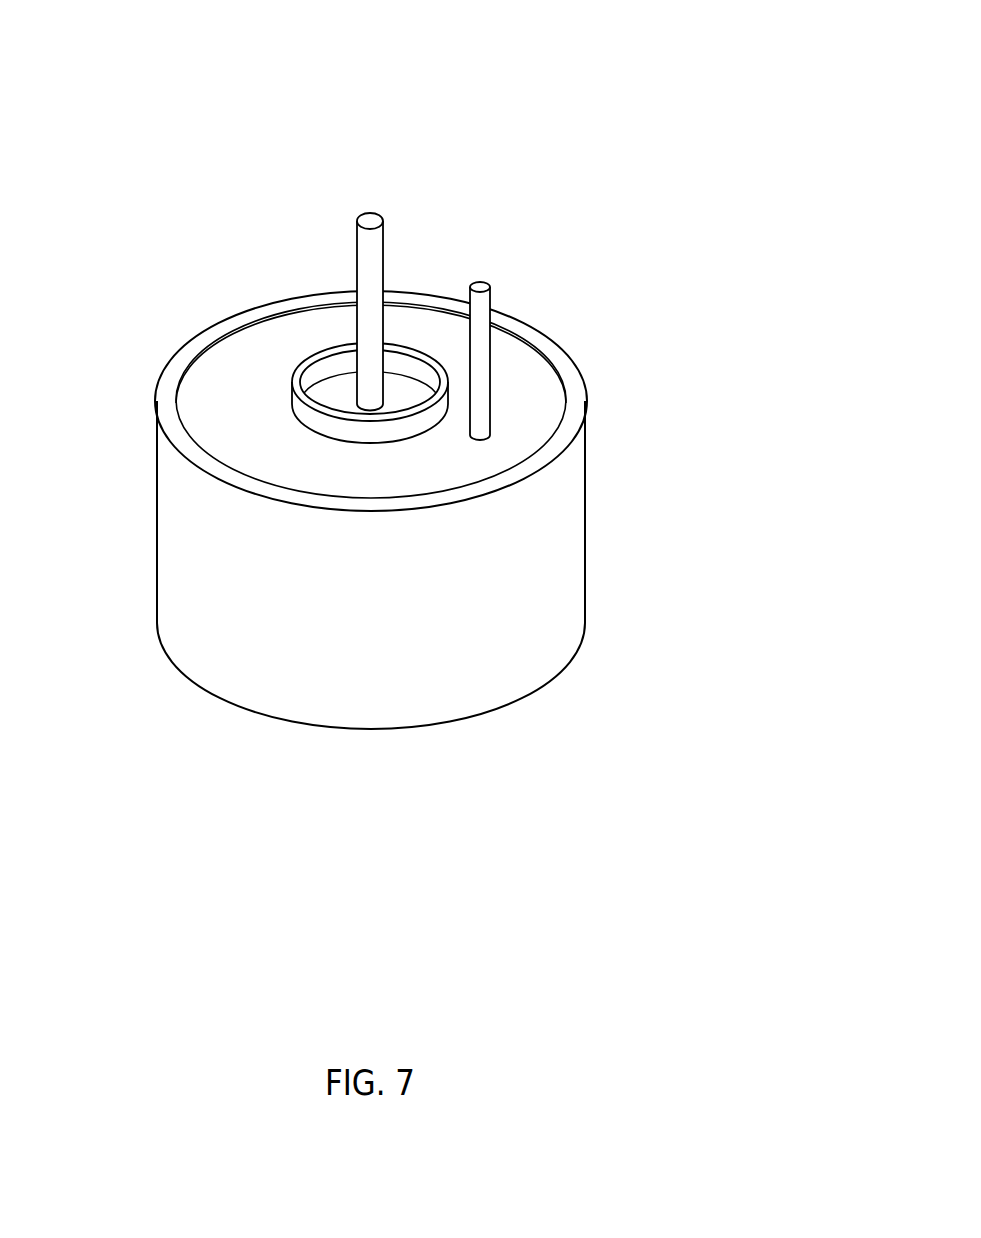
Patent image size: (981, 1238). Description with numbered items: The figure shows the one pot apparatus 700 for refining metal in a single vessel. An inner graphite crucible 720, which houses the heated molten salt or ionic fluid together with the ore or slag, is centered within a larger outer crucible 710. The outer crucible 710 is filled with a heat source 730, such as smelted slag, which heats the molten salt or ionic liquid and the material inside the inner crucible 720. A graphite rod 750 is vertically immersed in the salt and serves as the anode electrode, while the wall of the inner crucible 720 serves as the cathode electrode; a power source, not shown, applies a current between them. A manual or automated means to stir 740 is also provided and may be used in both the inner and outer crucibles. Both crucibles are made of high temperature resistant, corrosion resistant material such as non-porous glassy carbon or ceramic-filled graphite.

The one pot apparatus 700 is at (372, 368).
The outer crucible 710 is at (560, 612).
The inner graphite crucible 720 is at (328, 363).
The heat source 730 is at (328, 391).
The means to stir 740 is at (480, 302).
The graphite rod 750 is at (370, 243).